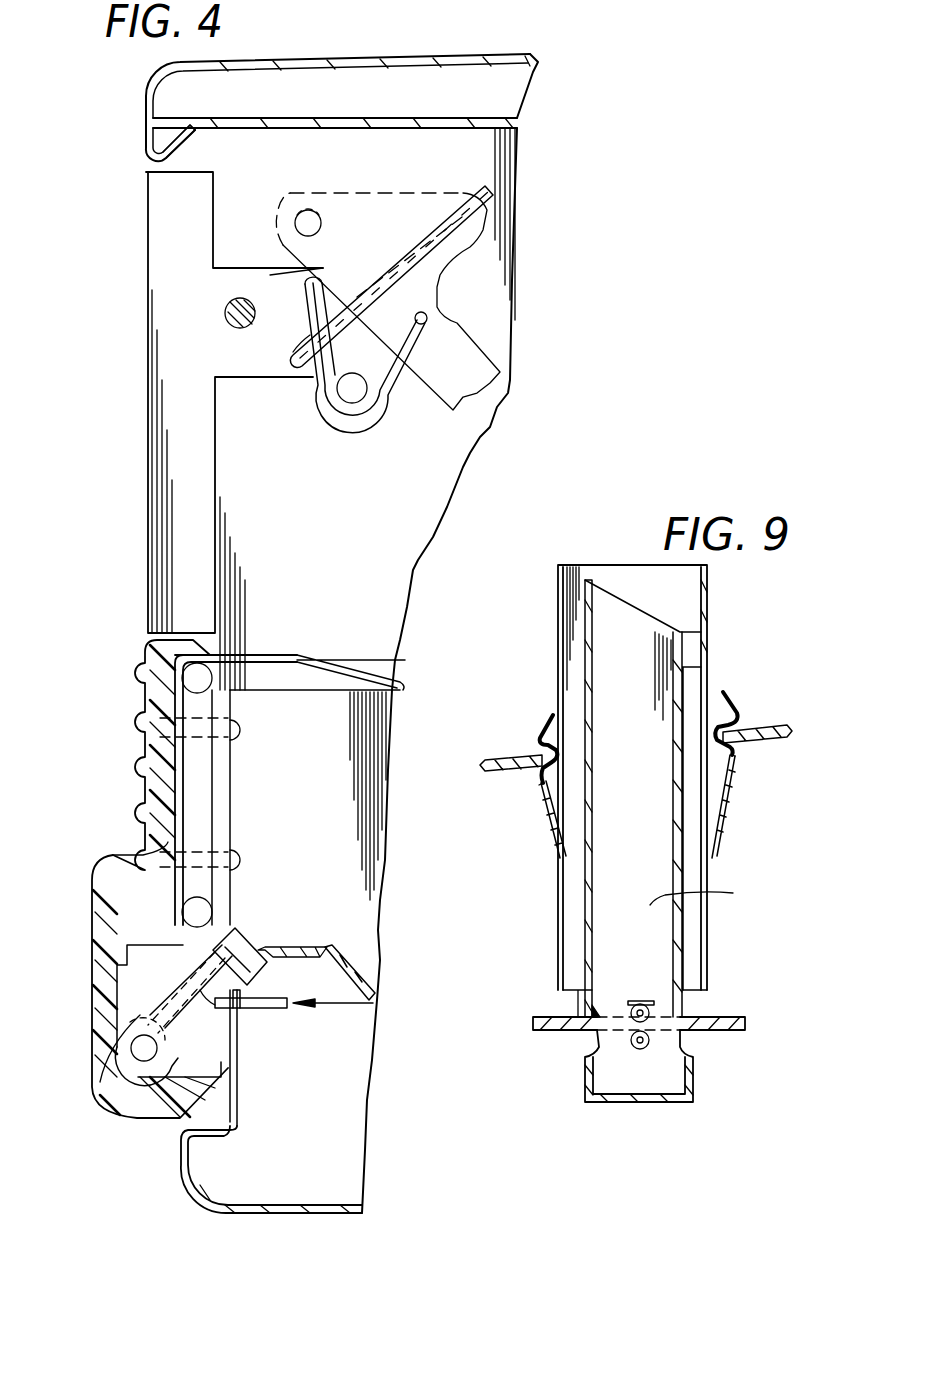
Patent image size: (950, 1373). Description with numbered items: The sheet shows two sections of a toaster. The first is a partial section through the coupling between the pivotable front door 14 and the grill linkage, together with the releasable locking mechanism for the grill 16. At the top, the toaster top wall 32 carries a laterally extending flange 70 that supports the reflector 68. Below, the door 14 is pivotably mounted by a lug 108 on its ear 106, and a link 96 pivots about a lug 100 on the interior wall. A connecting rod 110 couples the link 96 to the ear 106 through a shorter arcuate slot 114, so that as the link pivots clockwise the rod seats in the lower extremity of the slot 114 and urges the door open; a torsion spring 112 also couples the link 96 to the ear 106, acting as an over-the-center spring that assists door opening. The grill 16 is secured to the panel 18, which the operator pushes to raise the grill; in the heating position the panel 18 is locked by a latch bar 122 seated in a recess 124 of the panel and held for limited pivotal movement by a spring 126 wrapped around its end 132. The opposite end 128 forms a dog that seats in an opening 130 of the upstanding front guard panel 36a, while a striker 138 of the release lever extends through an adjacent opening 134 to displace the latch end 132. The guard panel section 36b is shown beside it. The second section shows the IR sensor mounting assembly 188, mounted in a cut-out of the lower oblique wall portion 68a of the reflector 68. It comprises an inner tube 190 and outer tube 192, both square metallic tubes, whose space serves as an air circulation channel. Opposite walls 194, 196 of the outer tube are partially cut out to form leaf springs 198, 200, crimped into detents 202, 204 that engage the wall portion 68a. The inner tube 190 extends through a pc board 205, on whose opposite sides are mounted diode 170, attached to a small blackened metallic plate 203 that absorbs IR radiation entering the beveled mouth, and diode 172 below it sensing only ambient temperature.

In FIG. 4, the front door 14 is at (152, 218).
In FIG. 4, the grill 16 is at (370, 662).
In FIG. 4, the panel 18 is at (118, 852).
In FIG. 4, the top wall 32 is at (360, 60).
In FIG. 4, the upstanding front guard panel 36a is at (303, 947).
In FIG. 4, the inclined flange 36b is at (355, 968).
In FIG. 4, the reflector 68 is at (445, 116).
In FIG. 9, the lower oblique wall portion 68a is at (492, 772).
In FIG. 4, the laterally extending flange 70 is at (198, 140).
In FIG. 4, the link 96 is at (395, 190).
In FIG. 4, the lug 100 is at (310, 222).
In FIG. 4, the ear 106 is at (266, 278).
In FIG. 4, the lug 108 is at (232, 312).
In FIG. 4, the connecting rod 110 is at (492, 200).
In FIG. 4, the torsion spring 112 is at (372, 412).
In FIG. 4, the arcuate slot 114 is at (292, 350).
In FIG. 4, the latch bar 122 is at (174, 1011).
In FIG. 4, the recess 124 is at (123, 1020).
In FIG. 4, the spring 126 is at (175, 920).
In FIG. 4, the latch bar end 128 is at (262, 945).
In FIG. 4, the opening 130 is at (238, 1010).
In FIG. 4, the latch bar end 132 is at (237, 945).
In FIG. 4, the opening 134 is at (237, 1062).
In FIG. 4, the striker portion 138 is at (238, 1035).
In FIG. 9, the diode 170 is at (620, 1012).
In FIG. 9, the diode 172 is at (637, 1057).
In FIG. 9, the sensor assembly 188 is at (732, 650).
In FIG. 9, the inner tube 190 is at (622, 600).
In FIG. 9, the outer tube 192 is at (712, 590).
In FIG. 9, the wall 194 is at (557, 643).
In FIG. 9, the wall 196 is at (710, 618).
In FIG. 9, the leaf spring 198 is at (545, 733).
In FIG. 9, the leaf spring 200 is at (737, 712).
In FIG. 9, the detent 202 is at (535, 775).
In FIG. 9, the blackened metallic plate 203 is at (641, 1000).
In FIG. 9, the detent 204 is at (742, 745).
In FIG. 9, the pc board 205 is at (745, 1018).